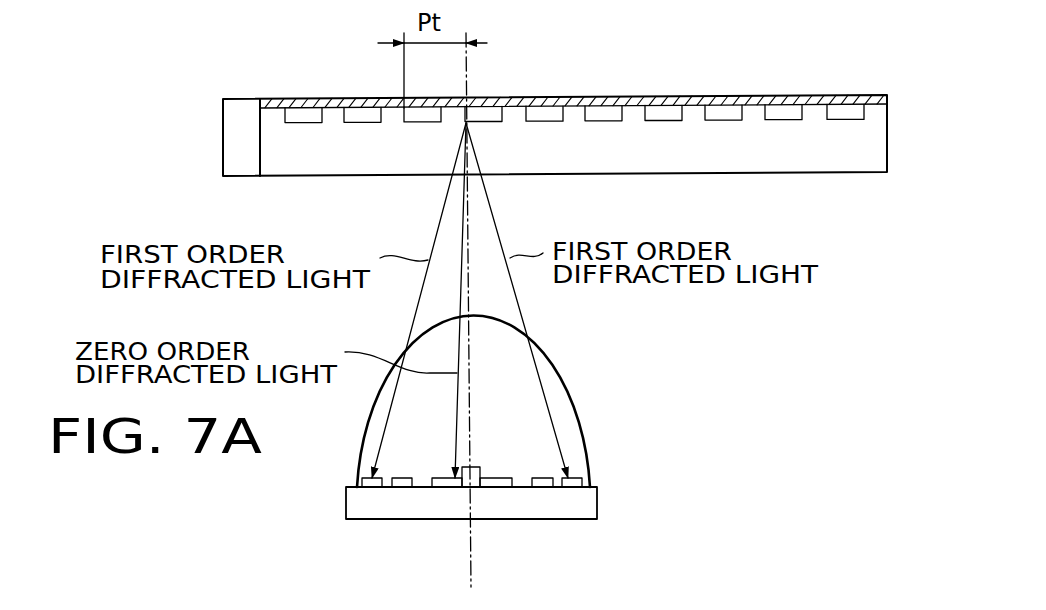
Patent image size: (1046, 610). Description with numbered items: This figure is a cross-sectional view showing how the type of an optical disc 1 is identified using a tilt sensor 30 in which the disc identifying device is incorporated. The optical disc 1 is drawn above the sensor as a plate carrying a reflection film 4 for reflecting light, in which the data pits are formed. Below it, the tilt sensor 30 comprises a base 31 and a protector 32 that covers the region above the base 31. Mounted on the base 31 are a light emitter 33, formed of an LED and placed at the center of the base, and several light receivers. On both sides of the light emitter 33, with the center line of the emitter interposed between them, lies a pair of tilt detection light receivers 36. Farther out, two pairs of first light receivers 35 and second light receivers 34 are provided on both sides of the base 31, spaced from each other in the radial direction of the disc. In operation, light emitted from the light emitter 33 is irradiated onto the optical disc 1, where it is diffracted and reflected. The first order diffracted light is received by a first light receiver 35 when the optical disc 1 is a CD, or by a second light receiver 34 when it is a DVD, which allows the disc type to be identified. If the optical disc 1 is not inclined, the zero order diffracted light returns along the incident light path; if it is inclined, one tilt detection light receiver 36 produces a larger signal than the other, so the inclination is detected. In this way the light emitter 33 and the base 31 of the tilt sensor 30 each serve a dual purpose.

The optical disc 1 is at (788, 155).
The reflection film 4 is at (750, 99).
The tilt sensor 30 is at (472, 437).
The base 31 is at (590, 505).
The protector 32 is at (582, 412).
The light emitter 33 is at (478, 468).
The second light receiver 34 is at (362, 482).
The first light receiver 35 is at (420, 462).
The tilt detection light receiver 36 is at (447, 488).